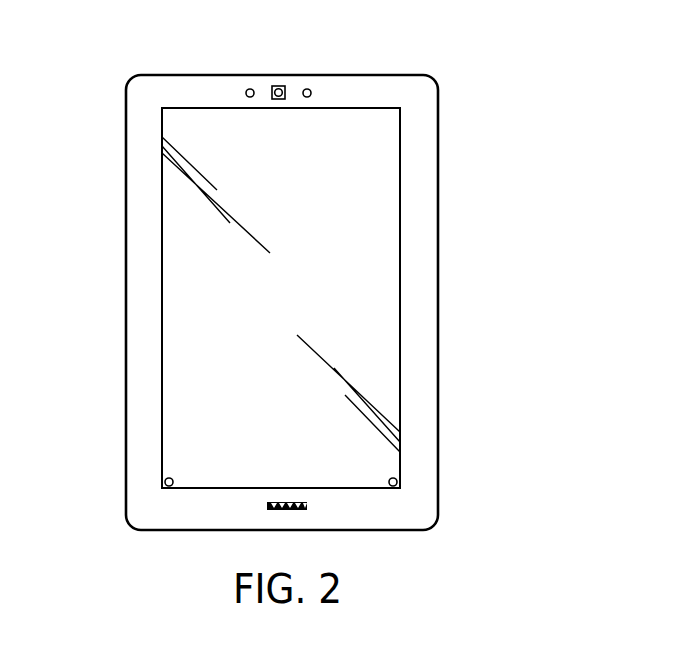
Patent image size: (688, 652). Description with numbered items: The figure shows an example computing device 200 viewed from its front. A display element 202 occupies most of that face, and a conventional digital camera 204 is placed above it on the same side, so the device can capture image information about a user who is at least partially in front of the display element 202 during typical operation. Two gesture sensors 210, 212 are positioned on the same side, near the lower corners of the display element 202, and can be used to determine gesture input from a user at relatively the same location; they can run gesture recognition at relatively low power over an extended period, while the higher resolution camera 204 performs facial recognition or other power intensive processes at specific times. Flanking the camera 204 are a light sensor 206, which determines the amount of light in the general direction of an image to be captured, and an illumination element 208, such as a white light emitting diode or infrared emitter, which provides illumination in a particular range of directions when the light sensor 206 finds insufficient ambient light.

The computing device 200 is at (570, 123).
The display element 202 is at (160, 120).
The digital camera 204 is at (273, 88).
The light sensor 206 is at (311, 91).
The illumination element 208 is at (246, 91).
The gesture sensor 210 is at (164, 481).
The gesture sensor 212 is at (398, 482).